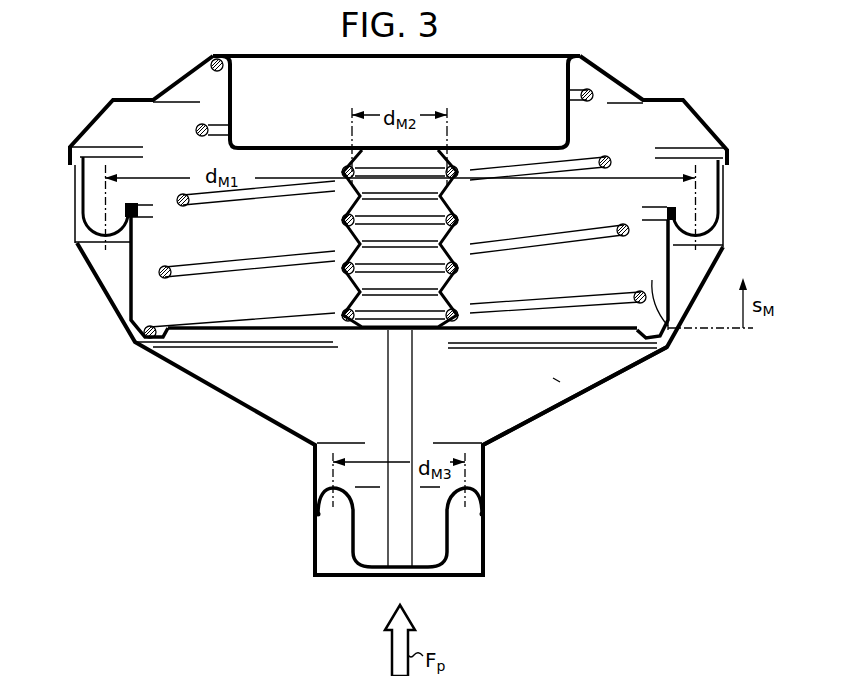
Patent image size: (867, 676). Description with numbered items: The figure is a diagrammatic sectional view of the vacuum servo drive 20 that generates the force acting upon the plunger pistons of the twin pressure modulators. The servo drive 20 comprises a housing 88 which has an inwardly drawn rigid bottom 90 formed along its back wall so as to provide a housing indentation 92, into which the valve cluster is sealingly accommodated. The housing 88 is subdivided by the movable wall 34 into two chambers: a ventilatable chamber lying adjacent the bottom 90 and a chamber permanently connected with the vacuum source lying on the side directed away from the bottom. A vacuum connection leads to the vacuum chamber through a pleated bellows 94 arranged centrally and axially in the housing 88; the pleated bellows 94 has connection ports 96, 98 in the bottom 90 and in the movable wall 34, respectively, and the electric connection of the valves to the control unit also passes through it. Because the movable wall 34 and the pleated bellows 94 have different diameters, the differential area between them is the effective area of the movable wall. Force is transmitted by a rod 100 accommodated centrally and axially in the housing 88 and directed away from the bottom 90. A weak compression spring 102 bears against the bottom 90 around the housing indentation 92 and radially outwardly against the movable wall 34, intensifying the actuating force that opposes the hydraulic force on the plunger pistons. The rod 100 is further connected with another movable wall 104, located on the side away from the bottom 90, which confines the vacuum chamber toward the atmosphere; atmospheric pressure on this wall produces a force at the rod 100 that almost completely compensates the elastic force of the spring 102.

The vacuum servo drive 20 is at (708, 104).
The movable wall 34 is at (610, 330).
The housing 88 is at (725, 220).
The rigid bottom 90 is at (512, 145).
The housing indentation 92 is at (277, 75).
The pleated bellows 94 is at (350, 284).
The connection port 96 is at (382, 150).
The connection port 98 is at (375, 332).
The rod 100 is at (412, 390).
The spring 102 is at (163, 276).
The movable wall 104 is at (440, 568).